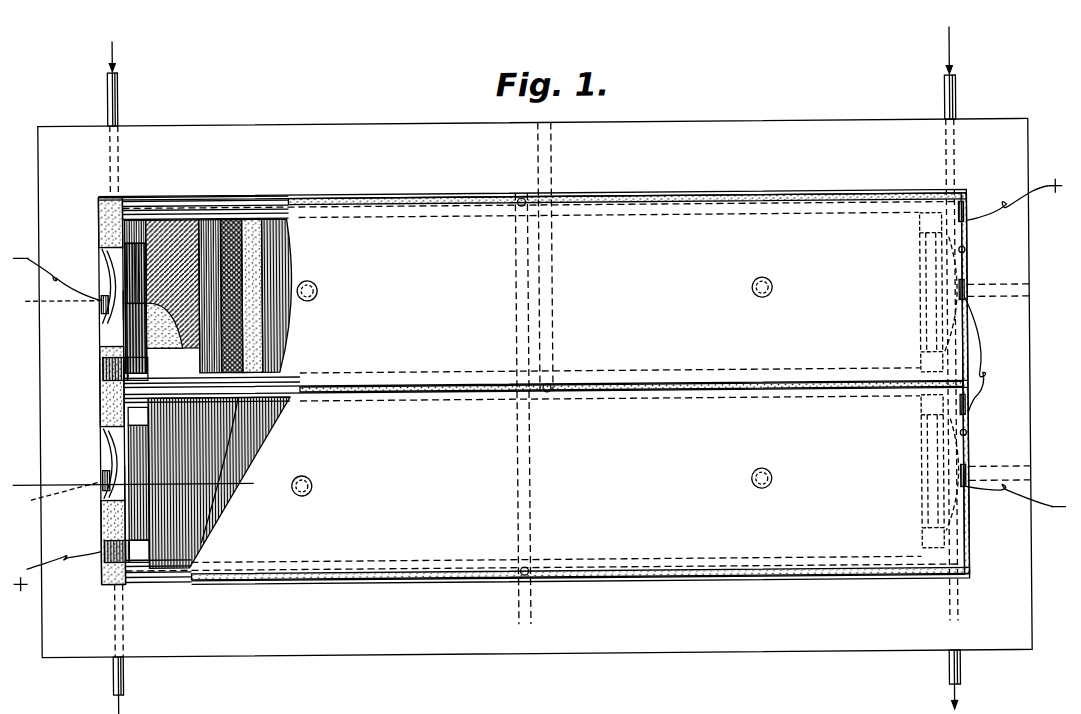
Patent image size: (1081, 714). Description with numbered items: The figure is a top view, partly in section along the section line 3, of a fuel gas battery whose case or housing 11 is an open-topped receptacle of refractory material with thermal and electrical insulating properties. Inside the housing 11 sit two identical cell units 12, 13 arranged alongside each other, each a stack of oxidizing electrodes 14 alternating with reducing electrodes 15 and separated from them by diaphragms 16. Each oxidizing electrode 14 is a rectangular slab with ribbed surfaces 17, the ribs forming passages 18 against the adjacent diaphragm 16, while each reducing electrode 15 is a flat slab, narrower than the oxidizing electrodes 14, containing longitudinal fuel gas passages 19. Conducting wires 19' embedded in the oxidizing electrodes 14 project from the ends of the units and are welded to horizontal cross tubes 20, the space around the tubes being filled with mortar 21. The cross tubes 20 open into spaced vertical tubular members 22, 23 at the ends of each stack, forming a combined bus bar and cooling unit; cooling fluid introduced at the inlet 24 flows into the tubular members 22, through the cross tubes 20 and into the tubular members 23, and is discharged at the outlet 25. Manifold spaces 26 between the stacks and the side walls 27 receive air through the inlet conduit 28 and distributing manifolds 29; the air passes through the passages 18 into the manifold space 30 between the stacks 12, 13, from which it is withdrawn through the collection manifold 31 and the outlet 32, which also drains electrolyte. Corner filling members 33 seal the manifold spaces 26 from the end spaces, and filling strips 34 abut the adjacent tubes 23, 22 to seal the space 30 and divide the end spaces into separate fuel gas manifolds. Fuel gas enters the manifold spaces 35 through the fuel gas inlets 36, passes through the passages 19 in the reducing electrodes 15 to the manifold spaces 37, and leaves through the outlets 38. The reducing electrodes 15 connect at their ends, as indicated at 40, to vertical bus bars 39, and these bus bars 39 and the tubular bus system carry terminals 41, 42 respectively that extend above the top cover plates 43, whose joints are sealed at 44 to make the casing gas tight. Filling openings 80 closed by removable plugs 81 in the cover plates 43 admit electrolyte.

The section line 3 is at (135, 484).
The case or housing 11 is at (846, 122).
The cell unit 12 is at (609, 324).
The cell unit 13 is at (610, 445).
The oxidizing electrode 14 is at (283, 330).
The reducing electrode 15 is at (247, 355).
The diaphragm 16 is at (255, 264).
The ribbed surface 17 is at (196, 527).
The passage 18 is at (221, 432).
The fuel gas passage 19 is at (193, 302).
The conducting wire 19' is at (208, 296).
The horizontal metal cross tube 20 is at (133, 243).
The mortar 21 is at (150, 244).
The tubular metal member 22 is at (136, 224).
The tubular metal member 23 is at (122, 370).
The cooling fluid inlet 24 is at (120, 95).
The cooling fluid outlet 25 is at (122, 678).
The manifold space 26 is at (200, 205).
The side wall 27 is at (777, 126).
The inlet conduit 28 is at (529, 450).
The distributing manifold 29 is at (243, 205).
The manifold space 30 is at (248, 386).
The collection manifold 31 is at (225, 382).
The outlet 32 is at (553, 290).
The corner filling member 33 is at (100, 216).
The filling strip 34 is at (128, 414).
The fuel gas manifold space 35 is at (106, 251).
The fuel gas inlet 36 is at (50, 407).
The fuel gas manifold space 37 is at (967, 253).
The fuel gas outlet 38 is at (1028, 296).
The bus bar 39 is at (103, 307).
The electrode connection 40 is at (112, 316).
The terminal 41 is at (966, 291).
The terminal 42 is at (968, 225).
The top cover plate 43 is at (598, 203).
The sealed joint 44 is at (516, 192).
The filling opening 80 is at (767, 280).
The removable plug 81 is at (773, 293).